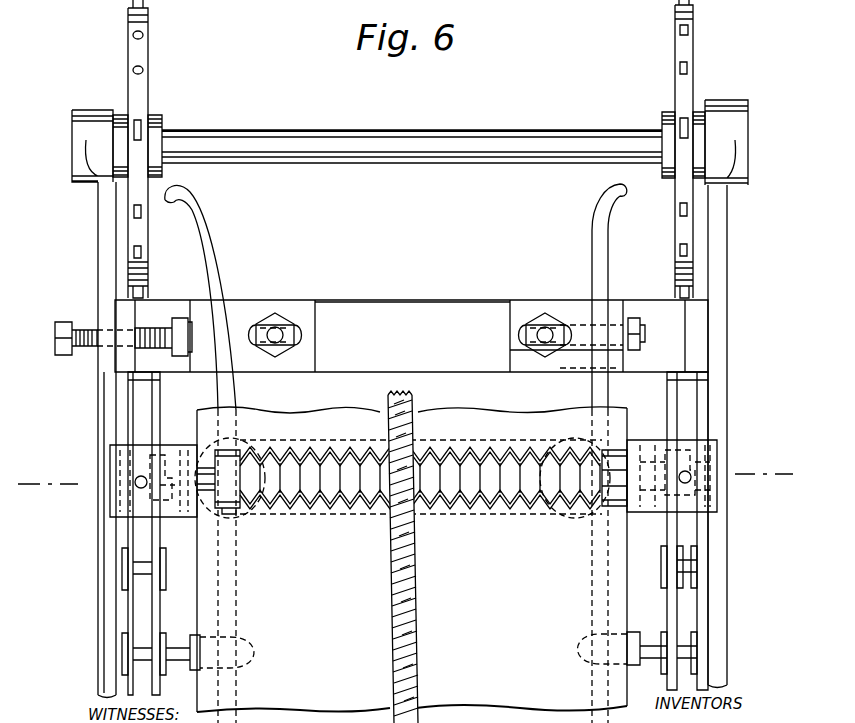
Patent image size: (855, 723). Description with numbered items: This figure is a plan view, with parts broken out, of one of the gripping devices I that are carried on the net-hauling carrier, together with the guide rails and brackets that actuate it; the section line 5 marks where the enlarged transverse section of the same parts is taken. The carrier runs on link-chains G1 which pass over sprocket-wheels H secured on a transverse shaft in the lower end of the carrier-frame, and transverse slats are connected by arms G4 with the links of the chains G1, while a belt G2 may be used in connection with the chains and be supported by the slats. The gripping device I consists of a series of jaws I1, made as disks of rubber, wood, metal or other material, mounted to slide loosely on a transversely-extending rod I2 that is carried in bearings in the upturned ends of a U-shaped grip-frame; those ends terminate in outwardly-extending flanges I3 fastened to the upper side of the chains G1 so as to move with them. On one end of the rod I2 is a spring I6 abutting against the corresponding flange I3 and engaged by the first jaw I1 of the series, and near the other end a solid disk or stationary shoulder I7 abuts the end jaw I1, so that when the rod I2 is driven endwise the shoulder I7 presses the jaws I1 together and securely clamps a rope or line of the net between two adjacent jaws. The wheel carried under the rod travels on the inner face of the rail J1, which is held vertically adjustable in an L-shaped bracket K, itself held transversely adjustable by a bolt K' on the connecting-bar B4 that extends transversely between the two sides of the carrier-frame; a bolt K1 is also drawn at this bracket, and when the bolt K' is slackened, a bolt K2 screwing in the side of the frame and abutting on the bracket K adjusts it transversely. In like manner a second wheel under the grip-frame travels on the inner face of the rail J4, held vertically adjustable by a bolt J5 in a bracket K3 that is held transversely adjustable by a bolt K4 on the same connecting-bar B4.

The sprocket-wheels H is at (142, 100).
The bolt K' is at (412, 134).
The rail J1 is at (215, 266).
The L-shaped bracket K is at (402, 320).
The bolt K2 is at (61, 326).
The clamp bolt K1 is at (280, 333).
The connecting-bar B4 is at (412, 314).
The bolt K4 is at (543, 323).
The rail J4 is at (590, 268).
The bolt J5 is at (643, 327).
The bracket K3 is at (570, 360).
The flanges I3 is at (183, 432).
The rod I2 is at (213, 448).
The jaws I1 is at (333, 446).
The gripping devices I is at (420, 462).
The spring I6 is at (613, 452).
The stationary shoulder I7 is at (237, 512).
The chains G1 is at (166, 588).
The belt G2 is at (412, 559).
The arms G4 is at (173, 664).
The section line 5- 5 is at (405, 467).